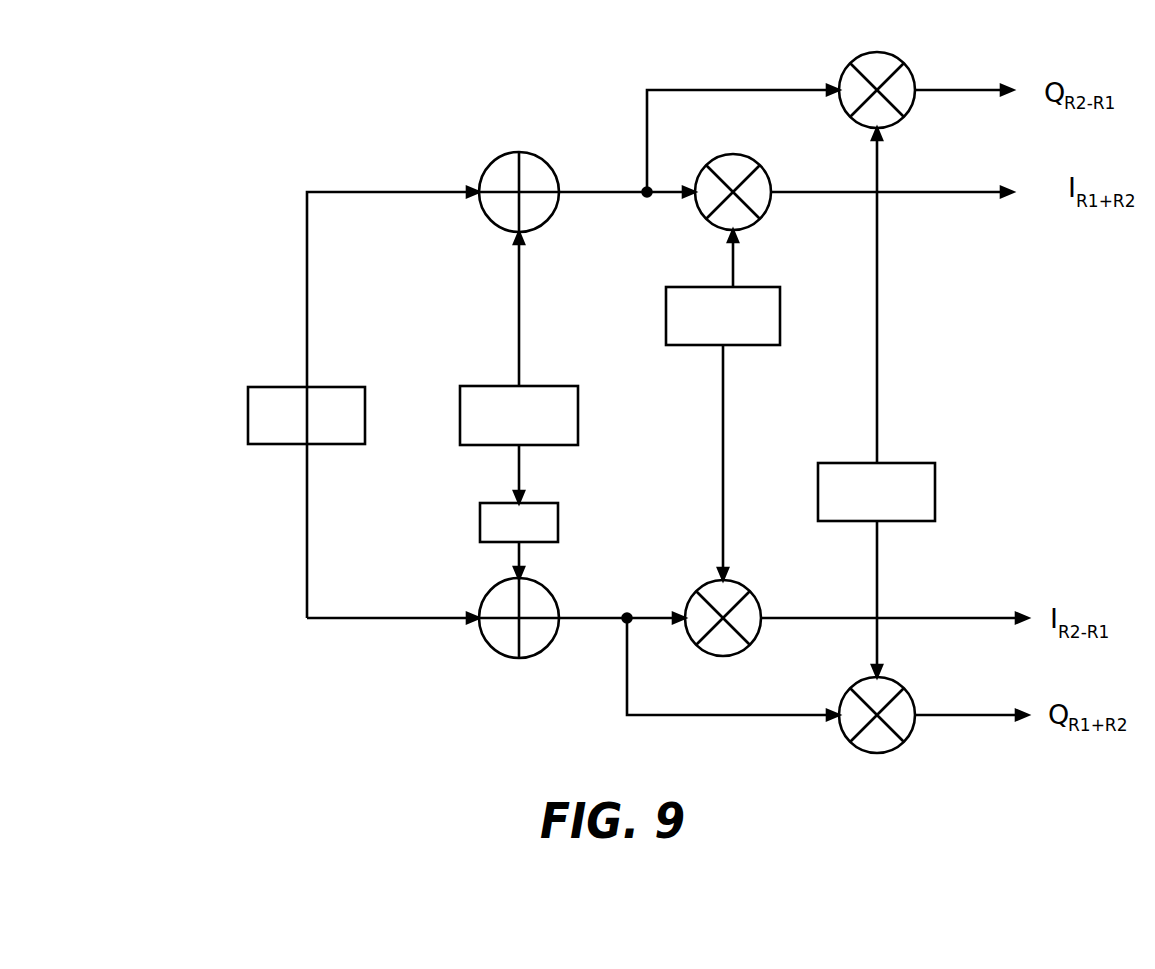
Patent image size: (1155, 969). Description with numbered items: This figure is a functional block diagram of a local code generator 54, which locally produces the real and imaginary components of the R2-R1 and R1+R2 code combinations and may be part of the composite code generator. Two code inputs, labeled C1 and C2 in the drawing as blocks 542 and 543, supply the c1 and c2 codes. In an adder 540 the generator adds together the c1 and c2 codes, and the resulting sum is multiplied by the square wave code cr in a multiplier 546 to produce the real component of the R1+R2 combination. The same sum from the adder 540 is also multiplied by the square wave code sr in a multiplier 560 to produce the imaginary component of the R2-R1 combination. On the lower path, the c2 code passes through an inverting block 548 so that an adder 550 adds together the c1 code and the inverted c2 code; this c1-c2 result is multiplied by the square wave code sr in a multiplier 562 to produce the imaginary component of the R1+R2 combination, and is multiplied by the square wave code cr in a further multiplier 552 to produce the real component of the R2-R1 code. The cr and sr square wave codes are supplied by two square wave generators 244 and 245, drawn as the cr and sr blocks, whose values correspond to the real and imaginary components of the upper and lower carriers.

The code generator 54 is at (581, 402).
The adder 540 is at (490, 174).
The coefficient C1 multiplier 542 is at (262, 406).
The coefficient C2 multiplier 543 is at (573, 410).
The multiplier 546 is at (777, 209).
The inverter (-1) 548 is at (474, 515).
The adder 550 is at (474, 611).
The multiplier 552 is at (757, 600).
The multiplier 560 is at (912, 70).
The multiplier 562 is at (916, 700).
The square wave generator 244 is at (677, 309).
The square wave generator 245 is at (930, 486).